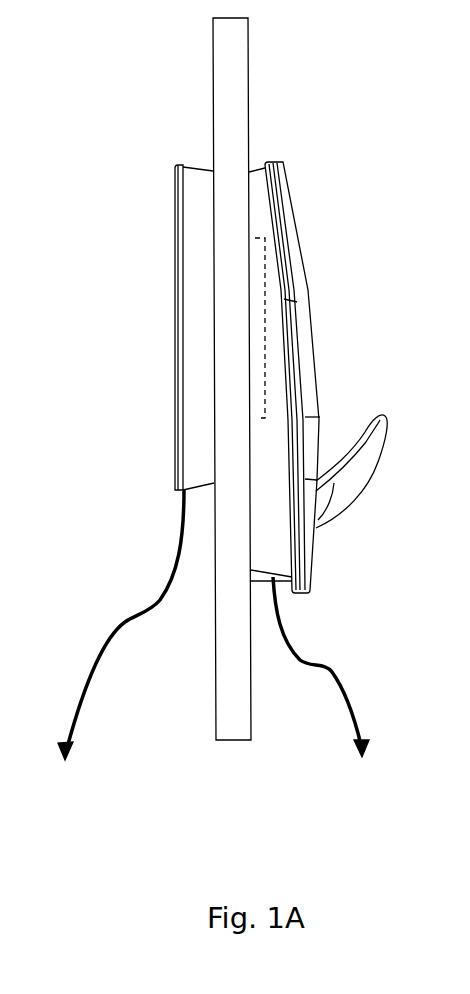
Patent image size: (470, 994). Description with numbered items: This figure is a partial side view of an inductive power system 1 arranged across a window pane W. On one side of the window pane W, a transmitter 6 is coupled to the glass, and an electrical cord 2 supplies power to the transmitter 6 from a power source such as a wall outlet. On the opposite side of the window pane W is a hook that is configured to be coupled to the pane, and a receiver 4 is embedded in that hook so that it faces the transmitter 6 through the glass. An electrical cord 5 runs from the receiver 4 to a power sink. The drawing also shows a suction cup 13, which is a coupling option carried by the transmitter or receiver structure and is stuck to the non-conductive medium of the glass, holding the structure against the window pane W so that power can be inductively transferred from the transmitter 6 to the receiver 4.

The window pane W is at (238, 95).
The inductive power system 1 is at (122, 338).
The electrical cord 2 is at (102, 647).
The receiver 4 is at (265, 293).
The electrical cord 5 is at (342, 668).
The transmitter 6 is at (193, 203).
The suction cup 13 is at (295, 253).